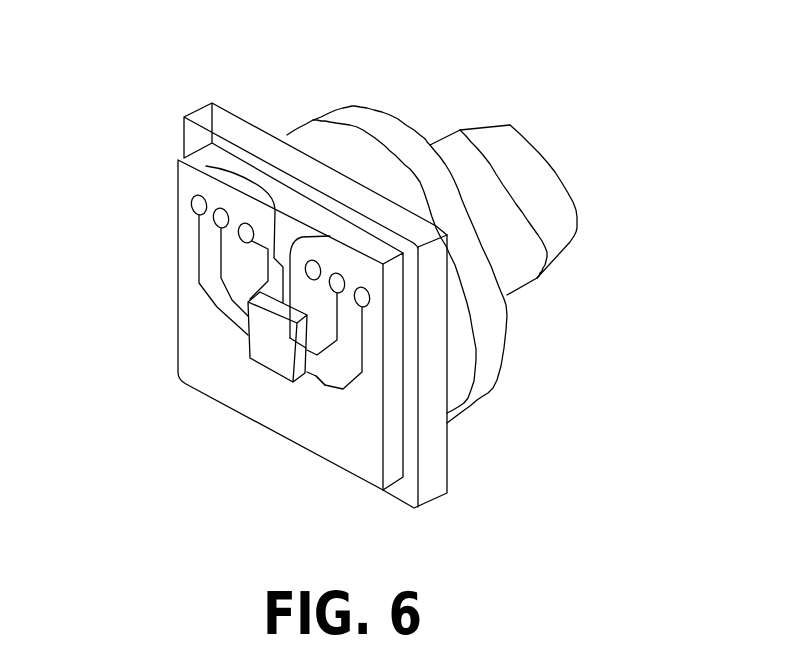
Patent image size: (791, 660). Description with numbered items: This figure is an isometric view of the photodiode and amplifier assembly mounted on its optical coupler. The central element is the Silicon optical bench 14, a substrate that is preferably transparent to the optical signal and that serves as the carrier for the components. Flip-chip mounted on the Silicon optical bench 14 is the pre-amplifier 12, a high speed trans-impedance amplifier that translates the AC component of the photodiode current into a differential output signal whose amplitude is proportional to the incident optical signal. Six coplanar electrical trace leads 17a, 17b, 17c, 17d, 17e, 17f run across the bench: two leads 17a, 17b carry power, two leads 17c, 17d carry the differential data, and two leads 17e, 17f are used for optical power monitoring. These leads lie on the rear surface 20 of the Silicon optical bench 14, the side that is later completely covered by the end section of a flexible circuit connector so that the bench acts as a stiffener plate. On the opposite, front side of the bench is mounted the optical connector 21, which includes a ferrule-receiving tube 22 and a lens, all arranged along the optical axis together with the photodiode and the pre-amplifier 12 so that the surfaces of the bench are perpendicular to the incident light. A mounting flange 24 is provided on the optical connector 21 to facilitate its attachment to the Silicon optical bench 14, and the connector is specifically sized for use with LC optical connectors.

The pre-amplifier 12 is at (270, 347).
The Silicon optical bench 14 is at (390, 448).
The electrical trace lead 17a is at (213, 310).
The electrical trace lead 17b is at (318, 378).
The electrical trace lead 17c is at (229, 291).
The electrical trace lead 17d is at (340, 328).
The electrical trace lead 17e is at (206, 166).
The electrical trace lead 17f is at (330, 236).
The rear surface 20 is at (333, 452).
The optical connector 21 is at (596, 218).
The ferrule-receiving tube 22 is at (538, 153).
The mounting flange 24 is at (229, 121).